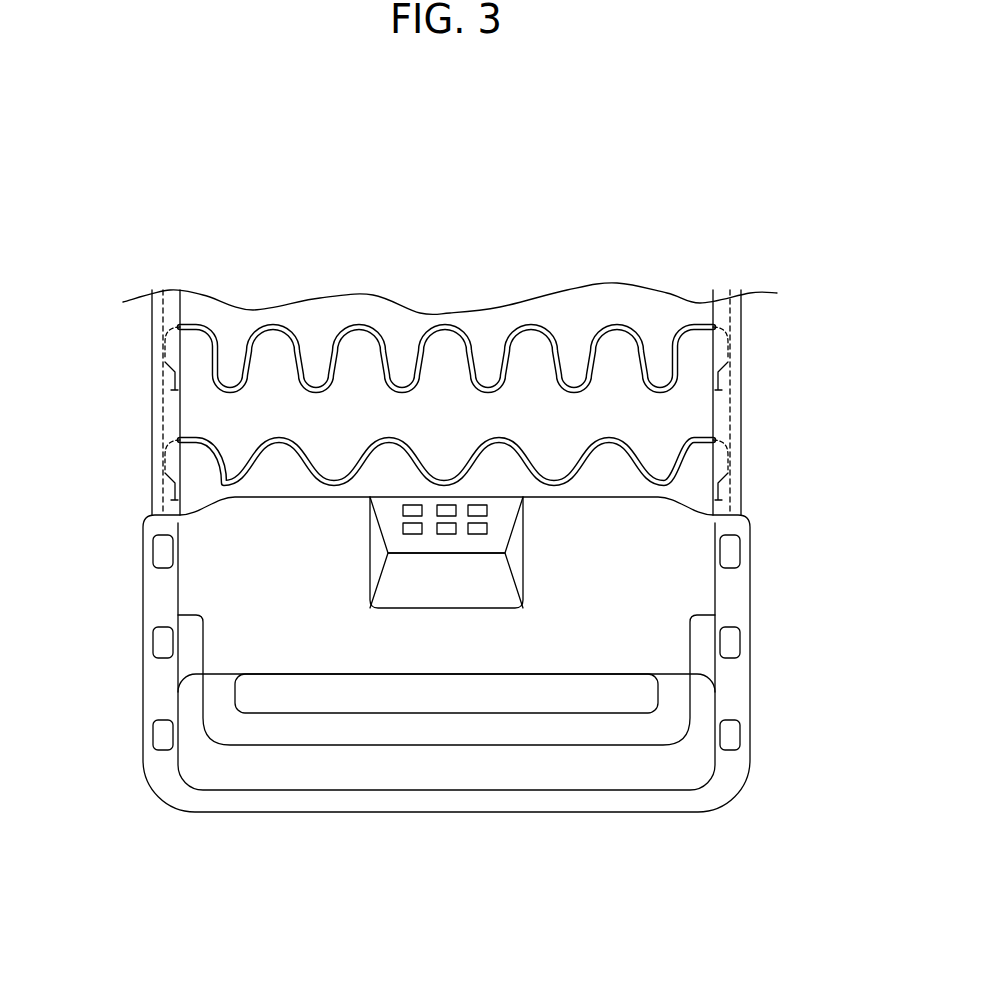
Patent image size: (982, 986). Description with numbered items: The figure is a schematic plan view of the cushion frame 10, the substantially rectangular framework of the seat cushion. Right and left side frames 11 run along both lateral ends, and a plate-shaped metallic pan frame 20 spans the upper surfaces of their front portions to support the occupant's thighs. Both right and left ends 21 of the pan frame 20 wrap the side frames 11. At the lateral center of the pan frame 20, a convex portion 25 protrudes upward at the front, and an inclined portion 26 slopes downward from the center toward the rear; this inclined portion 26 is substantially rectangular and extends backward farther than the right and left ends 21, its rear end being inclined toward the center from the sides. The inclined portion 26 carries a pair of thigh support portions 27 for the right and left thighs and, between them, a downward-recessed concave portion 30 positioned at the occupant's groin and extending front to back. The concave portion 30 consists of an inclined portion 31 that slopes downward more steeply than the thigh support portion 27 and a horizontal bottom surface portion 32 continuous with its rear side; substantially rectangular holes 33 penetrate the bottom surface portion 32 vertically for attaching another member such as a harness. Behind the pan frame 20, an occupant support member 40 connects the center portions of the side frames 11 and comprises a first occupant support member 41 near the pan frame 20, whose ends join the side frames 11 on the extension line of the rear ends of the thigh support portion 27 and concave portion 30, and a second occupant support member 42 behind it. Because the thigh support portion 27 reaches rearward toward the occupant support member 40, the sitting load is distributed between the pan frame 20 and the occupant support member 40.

The cushion frame 10 is at (451, 507).
The side frame 11 is at (170, 416).
The pan frame 20 is at (451, 720).
The right and left ends 21 is at (155, 680).
The convex portion 25 is at (377, 732).
The inclined portion 26 is at (317, 643).
The thigh support portion 27 is at (263, 577).
The concave portion 30 is at (529, 720).
The inclined portion 31 is at (440, 590).
The bottom surface portion 32 is at (500, 537).
The hole 33 is at (483, 510).
The occupant support member 40 is at (446, 312).
The first occupant support member 41 is at (500, 437).
The second occupant support member 42 is at (380, 333).